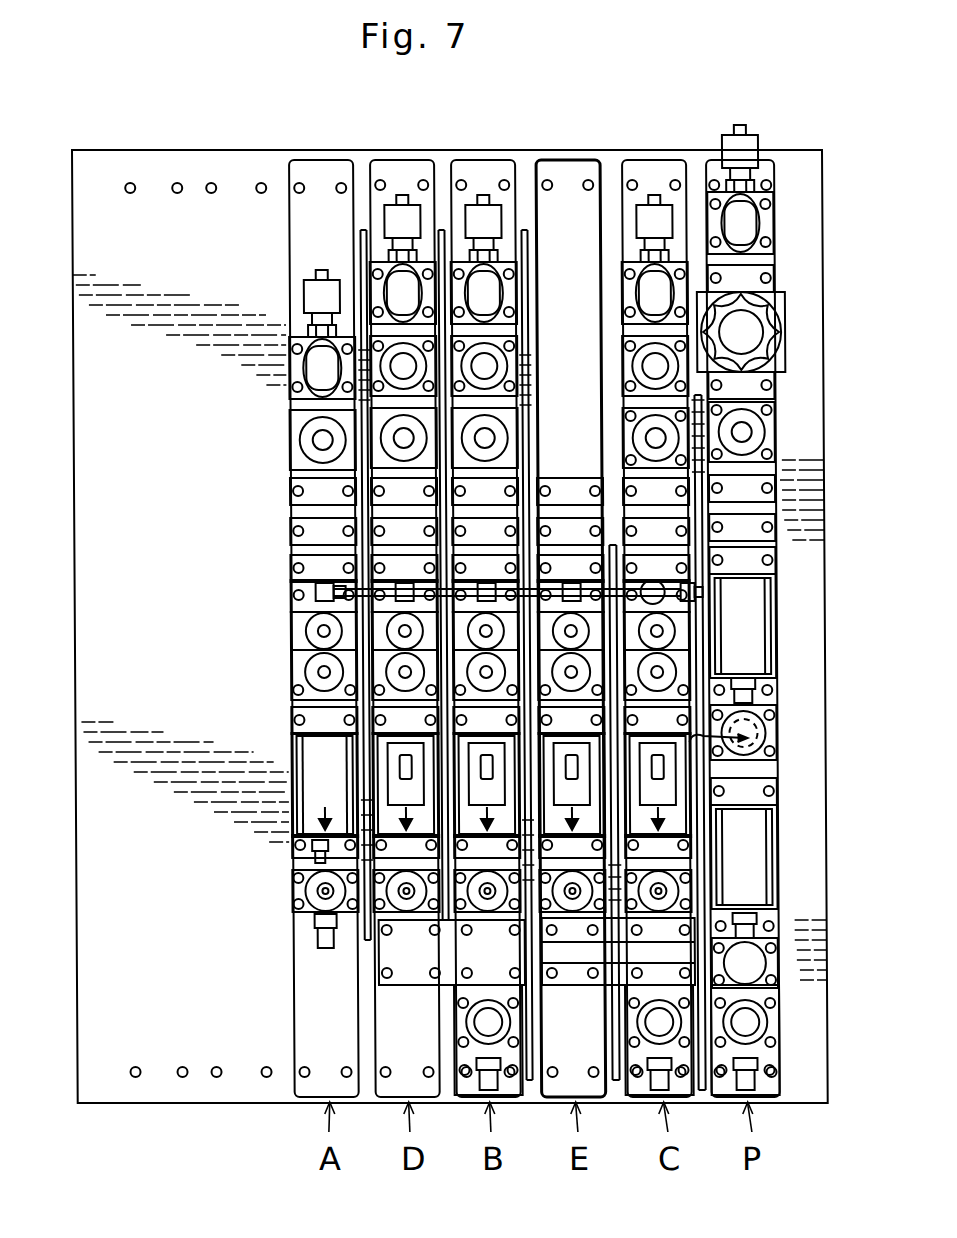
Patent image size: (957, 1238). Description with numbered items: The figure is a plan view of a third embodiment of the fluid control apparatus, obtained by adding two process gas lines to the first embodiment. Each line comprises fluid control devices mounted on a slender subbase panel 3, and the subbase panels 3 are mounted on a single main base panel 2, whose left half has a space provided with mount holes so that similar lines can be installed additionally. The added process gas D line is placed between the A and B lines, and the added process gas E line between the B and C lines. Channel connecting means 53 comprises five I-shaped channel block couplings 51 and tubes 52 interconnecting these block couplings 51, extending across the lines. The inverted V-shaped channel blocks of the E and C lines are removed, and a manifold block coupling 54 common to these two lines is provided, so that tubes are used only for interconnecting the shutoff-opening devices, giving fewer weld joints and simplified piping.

The main base panel 2 is at (812, 707).
The subbase panel 3 is at (321, 173).
The I-shaped channel block coupling 51 is at (318, 597).
The tube 52 is at (352, 602).
The channel connecting means 53 is at (345, 598).
The manifold block coupling 54 is at (583, 975).